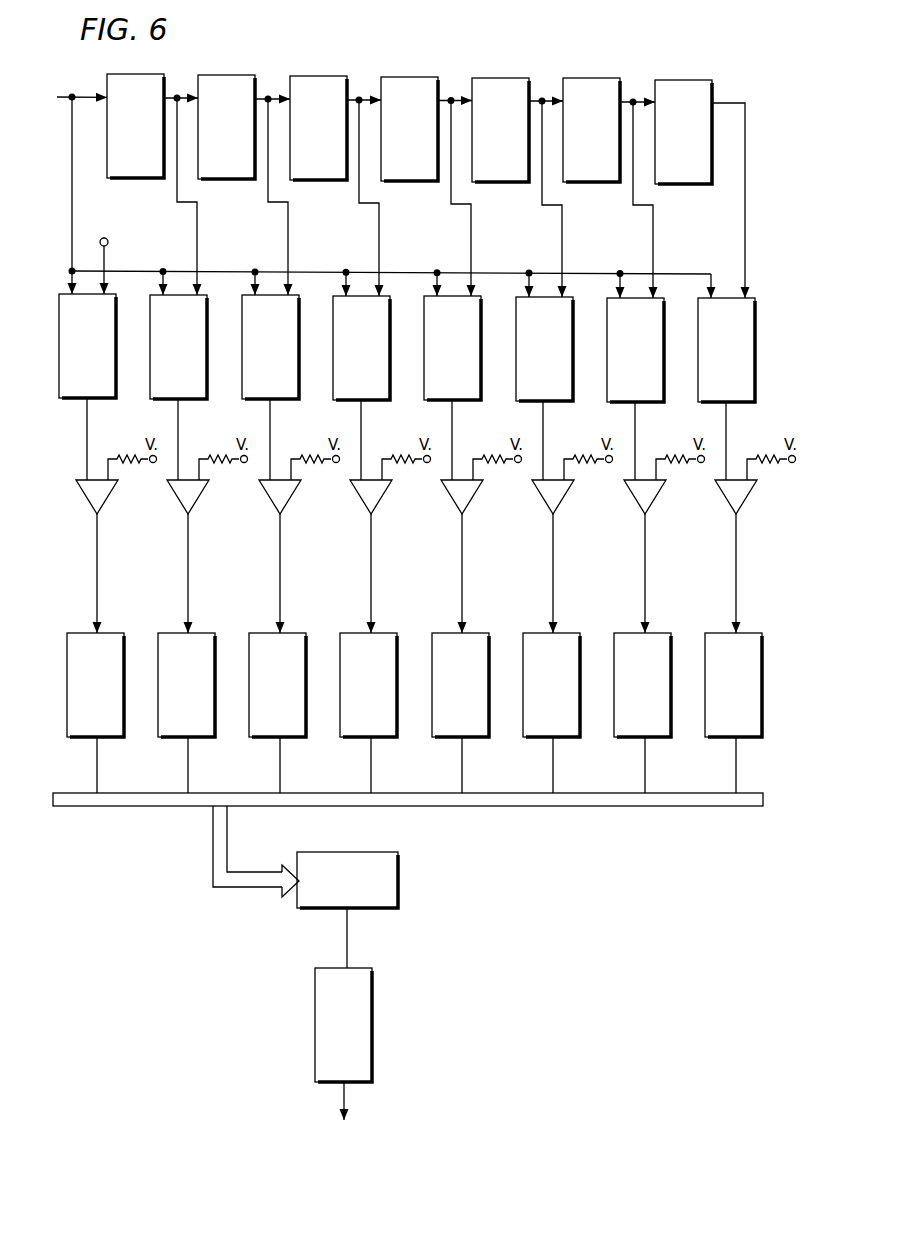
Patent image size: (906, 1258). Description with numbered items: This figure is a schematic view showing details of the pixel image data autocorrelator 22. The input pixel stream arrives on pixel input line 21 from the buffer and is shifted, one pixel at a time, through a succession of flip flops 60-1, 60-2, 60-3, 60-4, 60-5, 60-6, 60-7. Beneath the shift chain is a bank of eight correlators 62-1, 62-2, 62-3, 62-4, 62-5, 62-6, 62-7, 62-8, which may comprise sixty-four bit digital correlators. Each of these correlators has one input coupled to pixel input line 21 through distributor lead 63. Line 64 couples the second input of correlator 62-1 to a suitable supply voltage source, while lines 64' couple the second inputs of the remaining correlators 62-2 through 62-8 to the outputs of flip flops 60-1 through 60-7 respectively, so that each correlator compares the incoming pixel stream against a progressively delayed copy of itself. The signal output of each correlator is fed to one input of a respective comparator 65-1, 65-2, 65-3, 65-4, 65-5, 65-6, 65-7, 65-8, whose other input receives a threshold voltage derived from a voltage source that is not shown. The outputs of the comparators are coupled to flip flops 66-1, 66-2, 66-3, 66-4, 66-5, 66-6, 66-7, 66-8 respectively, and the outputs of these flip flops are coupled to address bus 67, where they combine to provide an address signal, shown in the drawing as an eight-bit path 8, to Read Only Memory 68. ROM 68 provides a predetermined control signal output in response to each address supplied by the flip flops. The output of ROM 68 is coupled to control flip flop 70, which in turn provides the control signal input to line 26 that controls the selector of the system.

The pixel input line 21 is at (84, 67).
The autocorrelator 22 is at (528, 26).
The flip flop 60-1 is at (118, 110).
The flip flop 60-2 is at (209, 111).
The flip flop 60-3 is at (301, 112).
The flip flop 60-4 is at (392, 113).
The flip flop 60-5 is at (483, 114).
The flip flop 60-6 is at (574, 114).
The flip flop 60-7 is at (666, 116).
The distributor lead 63 is at (72, 205).
The line 64 is at (390, 258).
The lines 64' is at (460, 197).
The correlator 62-1 is at (70, 331).
The correlator 62-2 is at (161, 332).
The correlator 62-3 is at (253, 332).
The correlator 62-4 is at (344, 333).
The correlator 62-5 is at (435, 333).
The correlator 62-6 is at (527, 334).
The correlator 62-7 is at (618, 335).
The correlator 62-8 is at (709, 335).
The comparator 65-1 is at (88, 500).
The comparator 65-2 is at (179, 500).
The comparator 65-3 is at (271, 500).
The comparator 65-4 is at (362, 500).
The comparator 65-5 is at (453, 500).
The comparator 65-6 is at (544, 500).
The comparator 65-7 is at (636, 500).
The comparator 65-8 is at (727, 500).
The flip flop 66-1 is at (79, 670).
The flip flop 66-2 is at (170, 670).
The flip flop 66-3 is at (261, 670).
The flip flop 66-4 is at (352, 670).
The flip flop 66-5 is at (444, 670).
The flip flop 66-6 is at (535, 670).
The flip flop 66-7 is at (626, 670).
The flip flop 66-8 is at (717, 670).
The address bus 67 is at (153, 808).
The 8-bit bus 8 is at (200, 851).
The Read Only Memory (ROM) 68 is at (400, 867).
The control flip flop 70 is at (373, 991).
The line 26 is at (346, 1098).